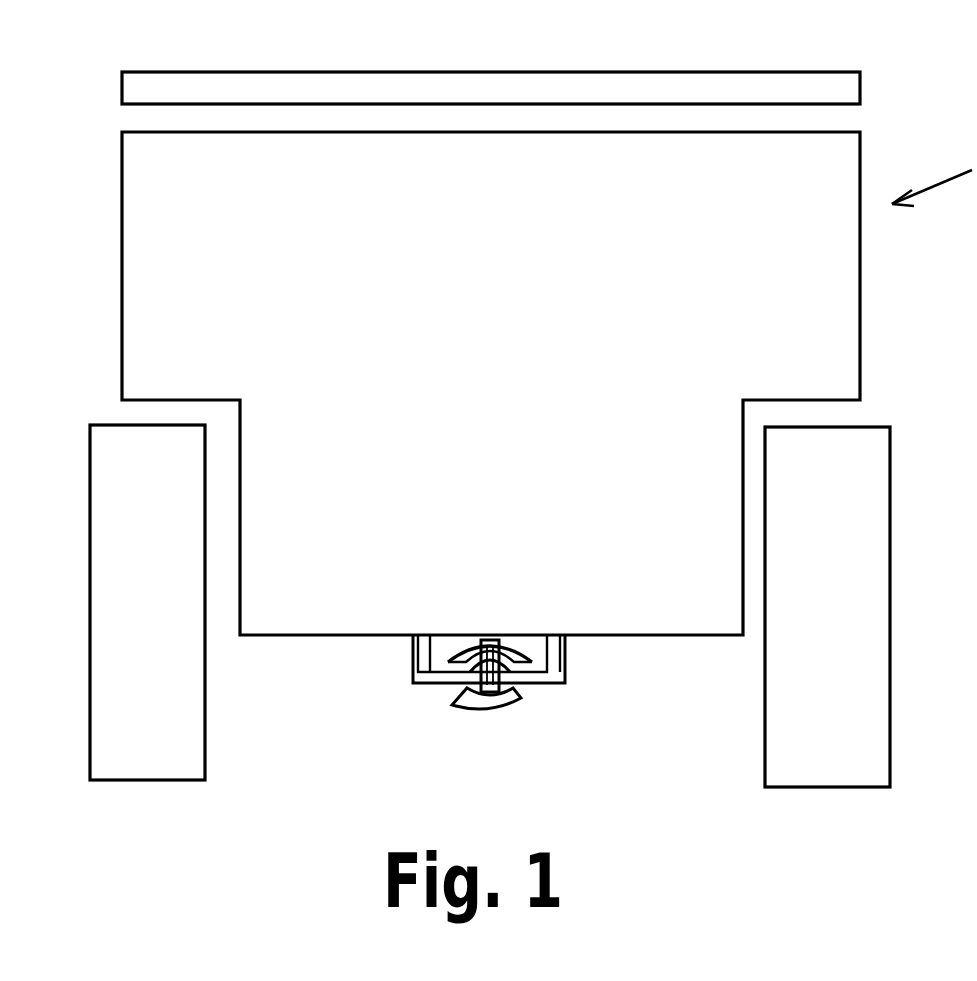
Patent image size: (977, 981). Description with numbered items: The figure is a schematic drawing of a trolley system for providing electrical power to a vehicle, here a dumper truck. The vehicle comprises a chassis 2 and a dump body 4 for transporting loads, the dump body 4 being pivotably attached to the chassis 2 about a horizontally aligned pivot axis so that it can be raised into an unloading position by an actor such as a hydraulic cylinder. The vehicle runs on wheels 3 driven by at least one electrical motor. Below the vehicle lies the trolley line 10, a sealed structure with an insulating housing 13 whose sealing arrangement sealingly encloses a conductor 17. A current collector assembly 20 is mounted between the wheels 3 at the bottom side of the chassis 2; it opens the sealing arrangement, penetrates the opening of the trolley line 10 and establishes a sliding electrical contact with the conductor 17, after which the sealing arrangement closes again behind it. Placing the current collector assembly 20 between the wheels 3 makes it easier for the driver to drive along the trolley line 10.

The chassis 2 is at (838, 310).
The wheels 3 is at (876, 488).
The dump body 4 is at (790, 86).
The trolley line 10 is at (486, 714).
The insulating housing 13 is at (518, 650).
The conductor 17 is at (502, 650).
The current collector assembly 20 is at (541, 700).